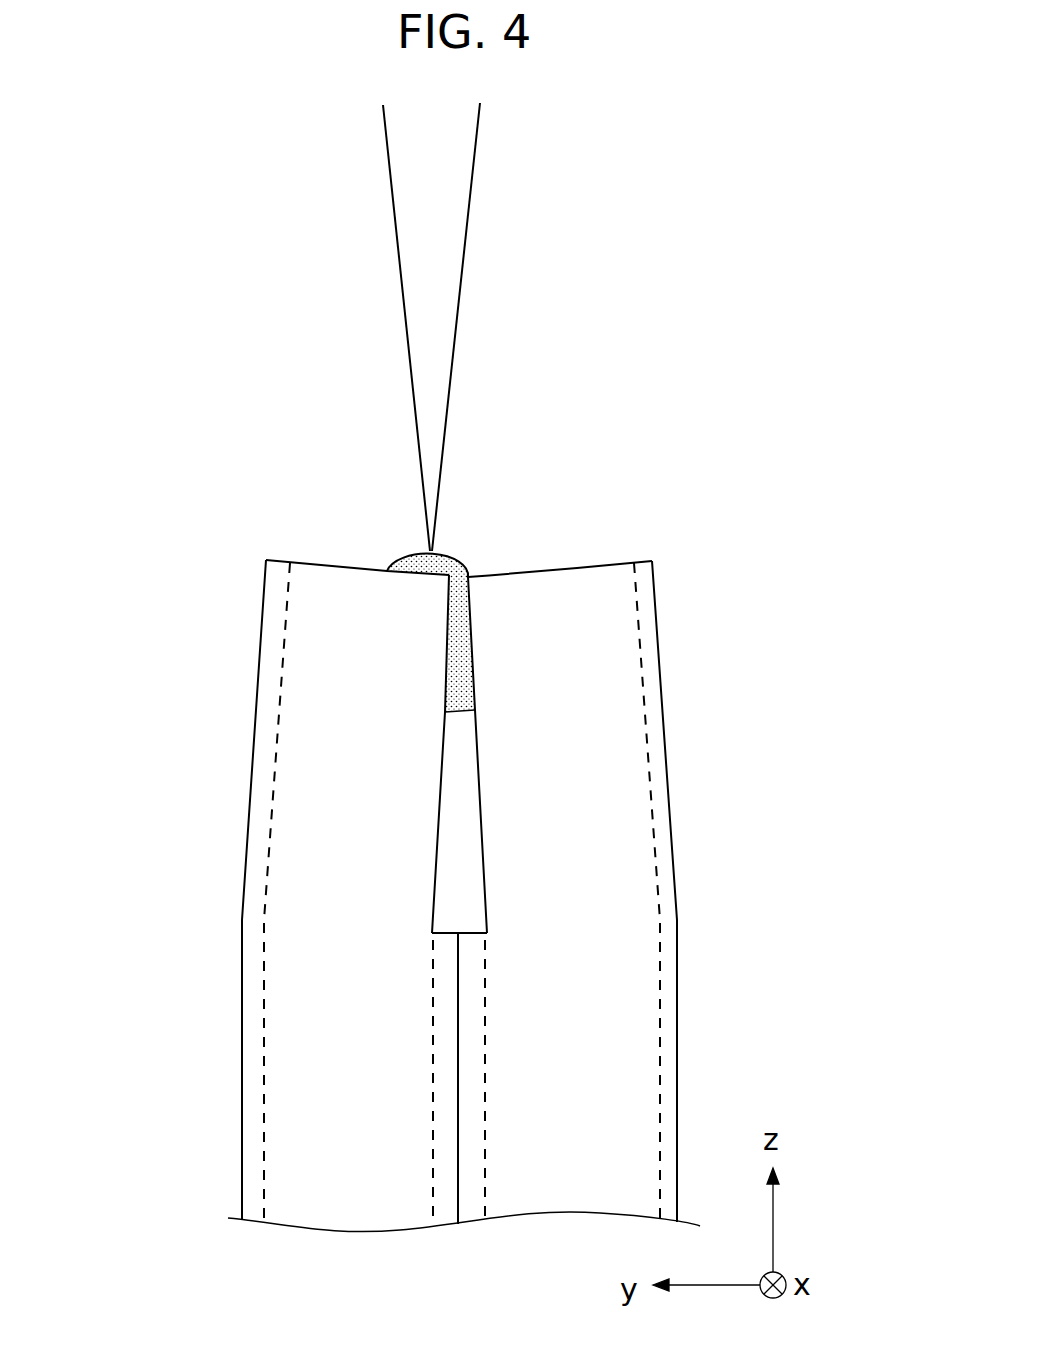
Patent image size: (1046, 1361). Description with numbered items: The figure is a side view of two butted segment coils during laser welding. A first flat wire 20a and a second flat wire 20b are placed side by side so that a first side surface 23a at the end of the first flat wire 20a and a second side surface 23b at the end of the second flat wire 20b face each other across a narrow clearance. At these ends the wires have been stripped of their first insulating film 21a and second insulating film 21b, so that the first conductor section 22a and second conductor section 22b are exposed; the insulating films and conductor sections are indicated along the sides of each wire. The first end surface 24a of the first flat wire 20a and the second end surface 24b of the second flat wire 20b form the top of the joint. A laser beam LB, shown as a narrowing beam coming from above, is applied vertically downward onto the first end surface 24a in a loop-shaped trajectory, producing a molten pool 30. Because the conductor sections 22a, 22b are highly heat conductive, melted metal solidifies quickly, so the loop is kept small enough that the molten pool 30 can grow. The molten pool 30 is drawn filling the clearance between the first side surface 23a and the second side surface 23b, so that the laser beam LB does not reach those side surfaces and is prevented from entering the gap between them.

The laser beam LB is at (462, 222).
The molten pool 30 is at (460, 563).
The first flat wire 20a is at (258, 839).
The second flat wire 20b is at (664, 840).
The first insulating film 21a is at (268, 705).
The second insulating film 21b is at (645, 705).
The first conductor section 22a is at (270, 803).
The second conductor section 22b is at (648, 801).
The first side surface 23a is at (438, 767).
The second side surface 23b is at (478, 767).
The first end surface 24a is at (343, 567).
The second end surface 24b is at (571, 565).